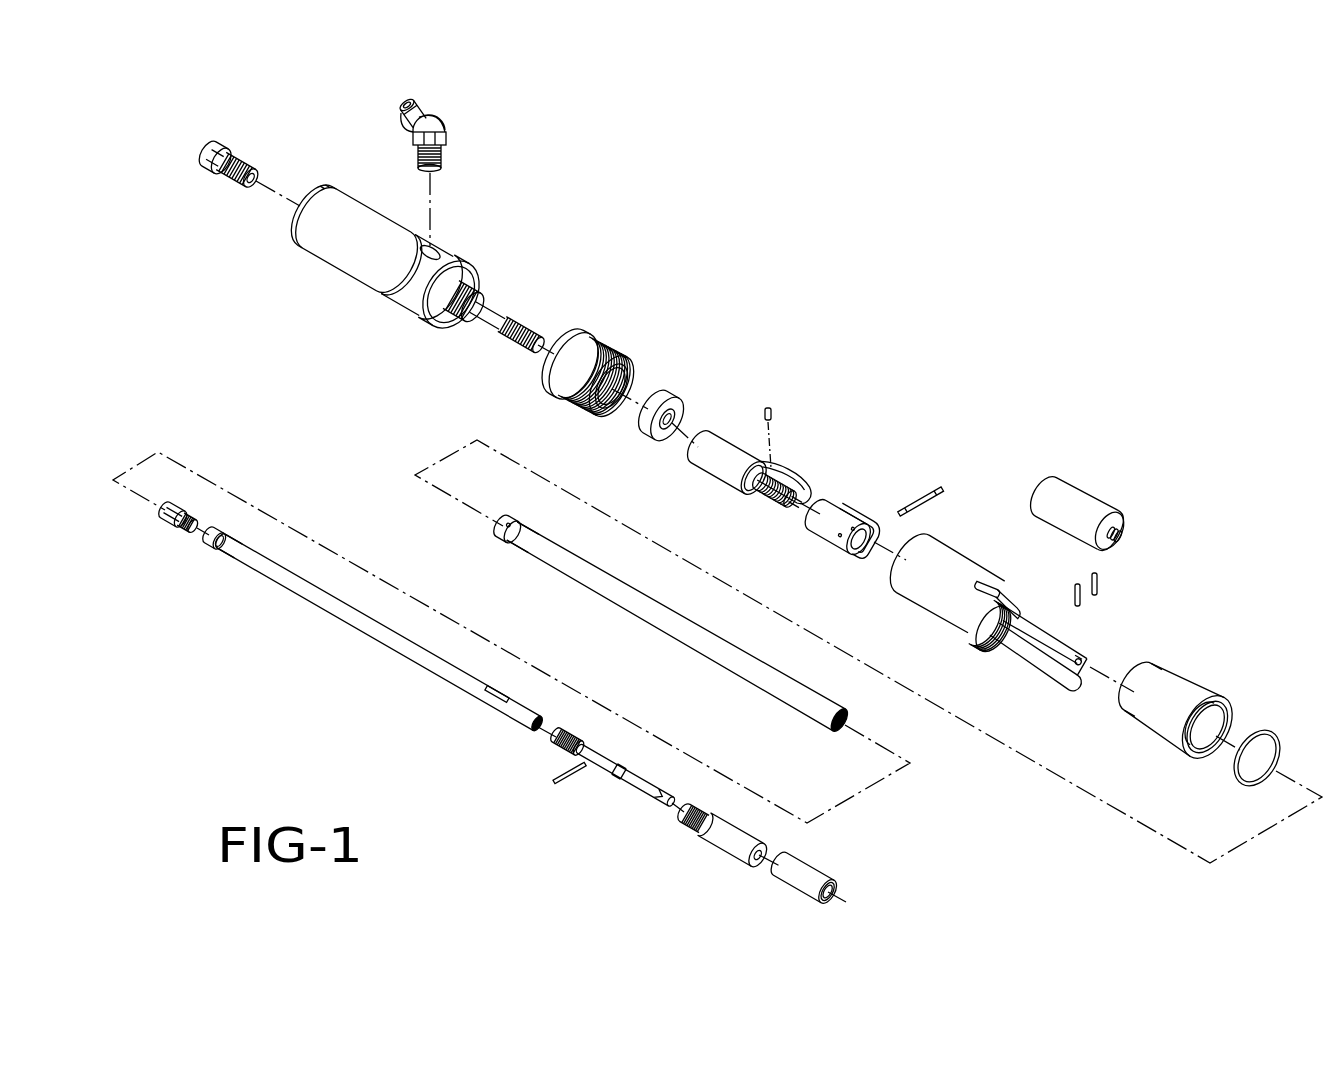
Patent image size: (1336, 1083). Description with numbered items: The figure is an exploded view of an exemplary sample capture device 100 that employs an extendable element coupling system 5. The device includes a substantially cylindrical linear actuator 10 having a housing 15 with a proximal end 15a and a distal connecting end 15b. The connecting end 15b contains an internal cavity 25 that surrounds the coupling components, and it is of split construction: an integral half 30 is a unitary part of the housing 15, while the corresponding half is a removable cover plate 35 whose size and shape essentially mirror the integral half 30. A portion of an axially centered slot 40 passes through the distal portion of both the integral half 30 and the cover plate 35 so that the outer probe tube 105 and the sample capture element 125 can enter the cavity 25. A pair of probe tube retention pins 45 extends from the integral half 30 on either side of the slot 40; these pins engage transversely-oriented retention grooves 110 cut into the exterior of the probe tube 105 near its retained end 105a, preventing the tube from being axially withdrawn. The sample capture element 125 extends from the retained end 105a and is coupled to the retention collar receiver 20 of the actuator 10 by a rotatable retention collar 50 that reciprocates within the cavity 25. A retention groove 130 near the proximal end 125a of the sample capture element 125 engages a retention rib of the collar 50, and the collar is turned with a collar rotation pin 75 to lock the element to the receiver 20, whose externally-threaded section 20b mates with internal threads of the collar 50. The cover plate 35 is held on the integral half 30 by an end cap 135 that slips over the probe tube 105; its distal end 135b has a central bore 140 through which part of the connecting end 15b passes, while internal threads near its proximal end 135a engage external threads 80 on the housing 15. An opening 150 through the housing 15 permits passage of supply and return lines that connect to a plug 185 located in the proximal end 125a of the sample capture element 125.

The extendable element coupling system 5 is at (976, 446).
The actuator 10 is at (349, 284).
The actuator housing 15 is at (415, 299).
The proximal end 15a is at (291, 255).
The distal connecting end 15b is at (1018, 503).
The retention collar receiver 20 is at (792, 449).
The externally-threaded section 20b is at (784, 506).
The internal cavity 25 is at (1048, 650).
The integral half 30 is at (1038, 667).
The cover plate 35 is at (1077, 508).
The axially centered slot 40 is at (1123, 537).
The probe tube retention pins 45 is at (1082, 600).
The rotatable retention collar 50 is at (850, 493).
The collar rotation pin 75 is at (930, 489).
The external threads 80 is at (988, 649).
The sample capture device 100 is at (811, 294).
The outer probe tube 105 is at (712, 644).
The retained end 105a is at (521, 555).
The retention grooves 110 is at (508, 538).
The sample capture element 125 is at (350, 614).
The proximal end 125a is at (254, 579).
The retention groove 130 is at (222, 547).
The end cap 135 is at (1177, 686).
The proximal end 135a is at (1138, 662).
The distal end 135b is at (1228, 713).
The central bore 140 is at (1209, 755).
The opening 150 is at (989, 587).
The plug 185 is at (171, 528).